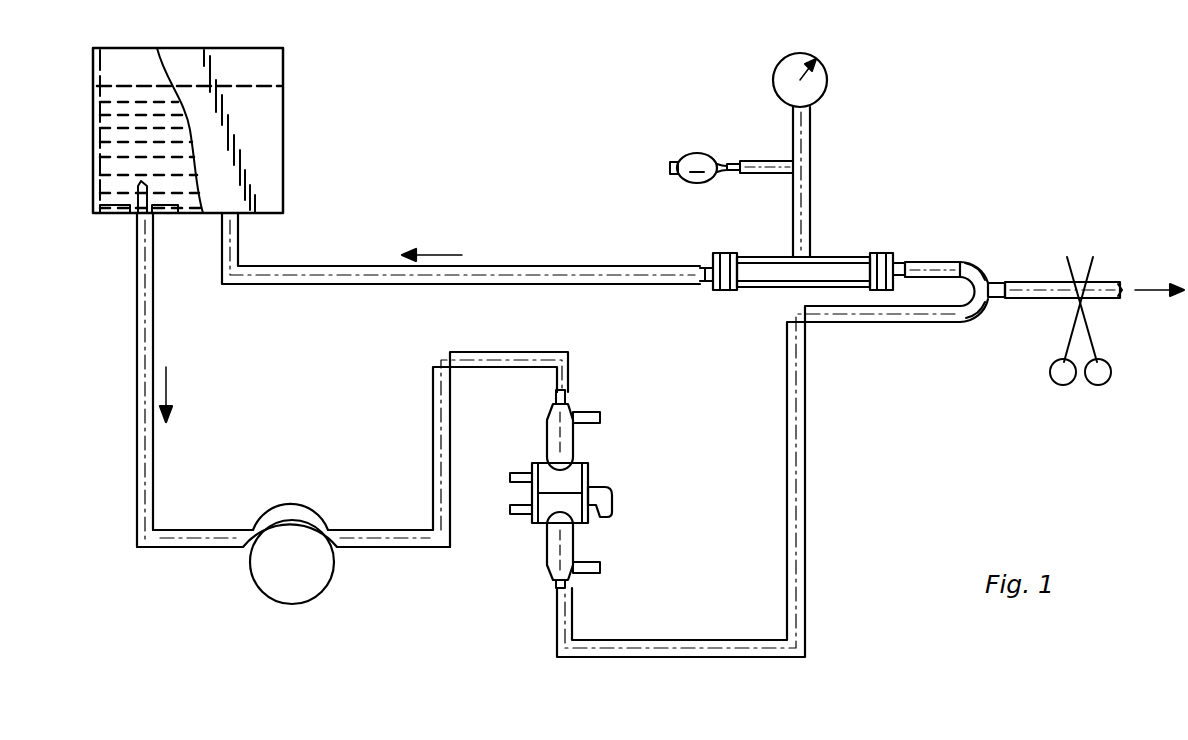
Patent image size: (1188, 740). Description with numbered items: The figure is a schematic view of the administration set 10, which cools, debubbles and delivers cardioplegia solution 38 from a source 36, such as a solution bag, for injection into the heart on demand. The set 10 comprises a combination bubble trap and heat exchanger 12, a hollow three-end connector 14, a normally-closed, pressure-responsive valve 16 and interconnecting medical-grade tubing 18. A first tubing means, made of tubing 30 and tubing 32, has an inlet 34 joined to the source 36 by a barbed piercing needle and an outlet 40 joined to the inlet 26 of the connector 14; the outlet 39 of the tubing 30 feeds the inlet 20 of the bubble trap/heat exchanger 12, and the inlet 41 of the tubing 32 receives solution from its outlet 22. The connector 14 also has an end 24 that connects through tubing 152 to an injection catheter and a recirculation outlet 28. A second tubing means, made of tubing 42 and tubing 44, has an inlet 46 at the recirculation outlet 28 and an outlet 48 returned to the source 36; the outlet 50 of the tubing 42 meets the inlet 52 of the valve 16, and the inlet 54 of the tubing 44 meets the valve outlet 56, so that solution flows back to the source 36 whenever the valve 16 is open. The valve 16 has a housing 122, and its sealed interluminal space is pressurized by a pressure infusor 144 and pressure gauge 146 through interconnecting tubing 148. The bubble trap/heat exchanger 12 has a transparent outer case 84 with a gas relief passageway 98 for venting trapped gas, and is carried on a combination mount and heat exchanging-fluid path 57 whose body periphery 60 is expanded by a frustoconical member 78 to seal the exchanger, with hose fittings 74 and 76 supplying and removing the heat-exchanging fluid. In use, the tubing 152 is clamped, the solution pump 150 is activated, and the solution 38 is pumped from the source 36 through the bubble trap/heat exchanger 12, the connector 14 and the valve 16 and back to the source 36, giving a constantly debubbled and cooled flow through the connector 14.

The administration set 10 is at (508, 122).
The combination bubble trap and heat exchanger 12 is at (670, 424).
The three-end connector 14 is at (992, 269).
The normally-closed, pressure-responsive valve 16 is at (757, 256).
The medical-grade tubing 18 is at (530, 266).
The inlet 20 is at (568, 399).
The outlet 22 is at (572, 586).
The end 24 is at (998, 298).
The inlet 26 is at (968, 323).
The recirculation outlet 28 is at (974, 266).
The tubing 30 is at (157, 490).
The tubing 32 is at (806, 500).
The inlet 34 is at (136, 217).
The source 36 is at (285, 96).
The cardioplegia solution 38 is at (116, 148).
The outlet 39 is at (552, 386).
The outlet 40 is at (957, 323).
The inlet 41 is at (556, 596).
The tubing 42 is at (935, 262).
The tubing 44 is at (367, 266).
The inlet 46 is at (962, 262).
The outlet 48 is at (239, 220).
The outlet 50 is at (928, 262).
The inlet 52 is at (894, 254).
The inlet 54 is at (712, 262).
The outlet 56 is at (706, 292).
The combination mount and heat exchanging-fluid path 57 is at (613, 501).
The periphery 60 is at (588, 468).
The hose fitting 74 is at (515, 472).
The hose fitting 76 is at (515, 515).
The frustoconical member 78 is at (596, 478).
The outer case 84 is at (557, 432).
The gas relief passageway 98 is at (601, 417).
The housing 122 is at (771, 290).
The pressure infusor 144 is at (694, 153).
The pressure gauge 146 is at (829, 76).
The interconnecting tubing 148 is at (812, 128).
The solution pump 150 is at (262, 592).
The tubing 152 is at (1110, 281).